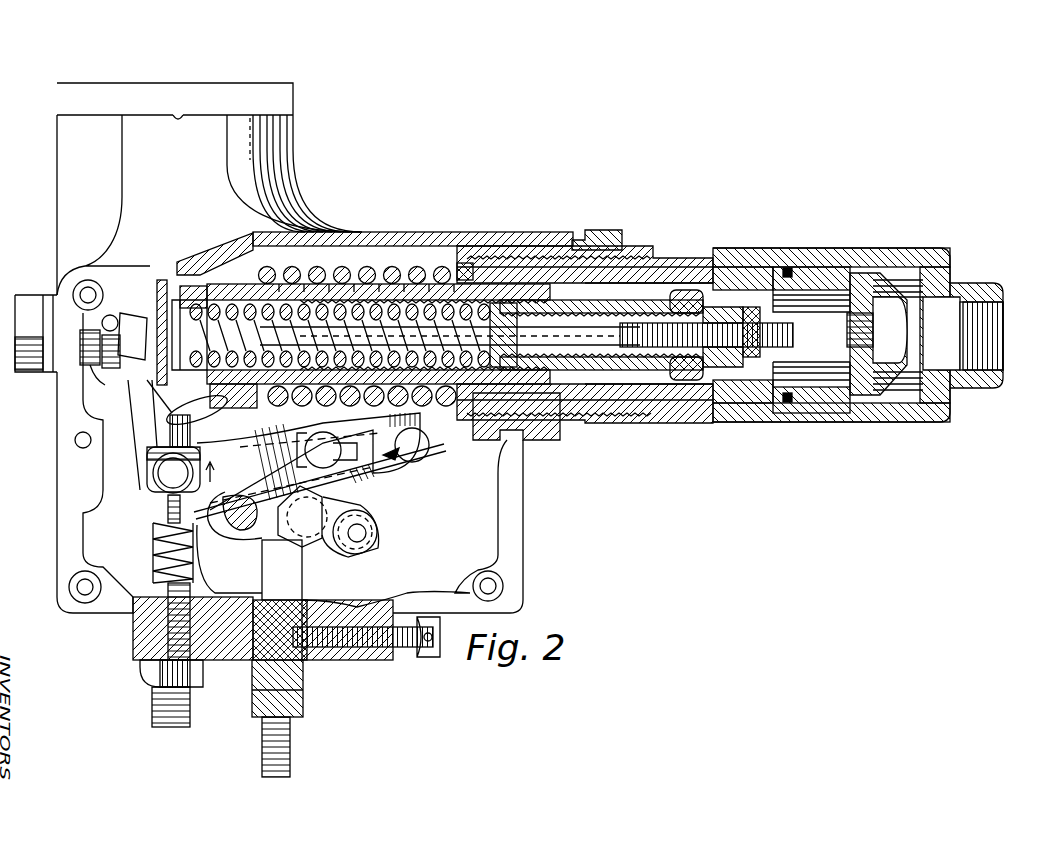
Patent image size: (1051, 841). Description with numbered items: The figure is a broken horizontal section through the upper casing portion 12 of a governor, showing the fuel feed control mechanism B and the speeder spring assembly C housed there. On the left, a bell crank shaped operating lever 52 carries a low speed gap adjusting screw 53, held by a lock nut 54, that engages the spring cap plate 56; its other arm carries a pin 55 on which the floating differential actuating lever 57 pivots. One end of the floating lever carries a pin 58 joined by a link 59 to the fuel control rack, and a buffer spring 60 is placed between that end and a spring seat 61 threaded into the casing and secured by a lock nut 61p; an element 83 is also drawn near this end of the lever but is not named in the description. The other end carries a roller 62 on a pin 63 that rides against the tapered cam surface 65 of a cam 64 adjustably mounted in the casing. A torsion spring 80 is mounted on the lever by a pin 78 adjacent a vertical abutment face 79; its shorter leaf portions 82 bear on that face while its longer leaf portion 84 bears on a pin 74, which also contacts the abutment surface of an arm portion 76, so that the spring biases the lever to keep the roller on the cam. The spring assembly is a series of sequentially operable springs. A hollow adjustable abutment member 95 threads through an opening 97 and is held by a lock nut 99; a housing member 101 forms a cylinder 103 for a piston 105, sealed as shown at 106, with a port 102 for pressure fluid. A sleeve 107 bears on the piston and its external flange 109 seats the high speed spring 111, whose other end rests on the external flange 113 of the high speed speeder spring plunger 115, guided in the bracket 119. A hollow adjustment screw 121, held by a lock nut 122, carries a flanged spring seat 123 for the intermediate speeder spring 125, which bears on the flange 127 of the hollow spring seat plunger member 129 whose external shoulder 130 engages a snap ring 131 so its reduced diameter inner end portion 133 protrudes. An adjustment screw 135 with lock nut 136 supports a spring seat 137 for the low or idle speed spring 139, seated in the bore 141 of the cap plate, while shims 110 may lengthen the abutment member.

The upper casing portion 12 is at (72, 413).
The bell crank shaped operating lever 52 is at (145, 467).
The low speed gap adjusting screw 53 is at (100, 360).
The lock nut 54 is at (110, 318).
The pin 55 is at (337, 435).
The spring cap plate 56 is at (160, 290).
The floating differential actuating lever 57 is at (287, 440).
The pin 58 is at (173, 473).
The link 59 is at (170, 432).
The buffer spring 60 is at (160, 543).
The spring seat 61 is at (153, 708).
The lock nut 61p is at (147, 673).
The roller 62 is at (377, 542).
The pin 63 is at (359, 532).
The cam 64 is at (303, 593).
The tapered cam surface 65 is at (300, 580).
The pin 74 is at (433, 453).
The arm portion 76 is at (423, 417).
The pin 78 is at (323, 547).
The vertical abutment face 79 is at (226, 513).
The torsion spring 80 is at (280, 658).
The shorter leaf portions 82 is at (293, 524).
The spring seat 83 is at (153, 497).
The longer leaf portion 84 is at (390, 470).
The fuel feed control mechanism B is at (442, 494).
The speeder spring assembly C is at (415, 250).
The hollow adjustable abutment member 95 is at (640, 245).
The opening 97 is at (540, 247).
The lock nut 99 is at (580, 230).
The housing member 101 is at (940, 250).
The port 102 is at (983, 345).
The cylinder 103 is at (903, 267).
The piston 105 is at (820, 280).
The seal 106 is at (790, 263).
The sleeve 107 is at (653, 413).
The external flange 109 is at (480, 273).
The shims 110 is at (487, 270).
The high speed spring 111 is at (367, 267).
The external flange 113 is at (278, 264).
The high speed speeder spring plunger 115 is at (516, 416).
The bracket 119 is at (255, 247).
The hollow adjustment screw 121 is at (617, 377).
The lock nut 122 is at (682, 297).
The flanged spring seat 123 is at (502, 306).
The intermediate speeder spring 125 is at (427, 306).
The flange 127 is at (388, 284).
The hollow spring seat plunger member 129 is at (316, 266).
The external shoulder 130 is at (238, 291).
The snap ring 131 is at (213, 293).
The reduced diameter inner end portion 133 is at (192, 293).
The adjustment screw 135 is at (715, 365).
The lock nut 136 is at (762, 350).
The spring seat 137 is at (338, 386).
The low or idle speed spring 139 is at (233, 396).
The bore 141 is at (188, 405).